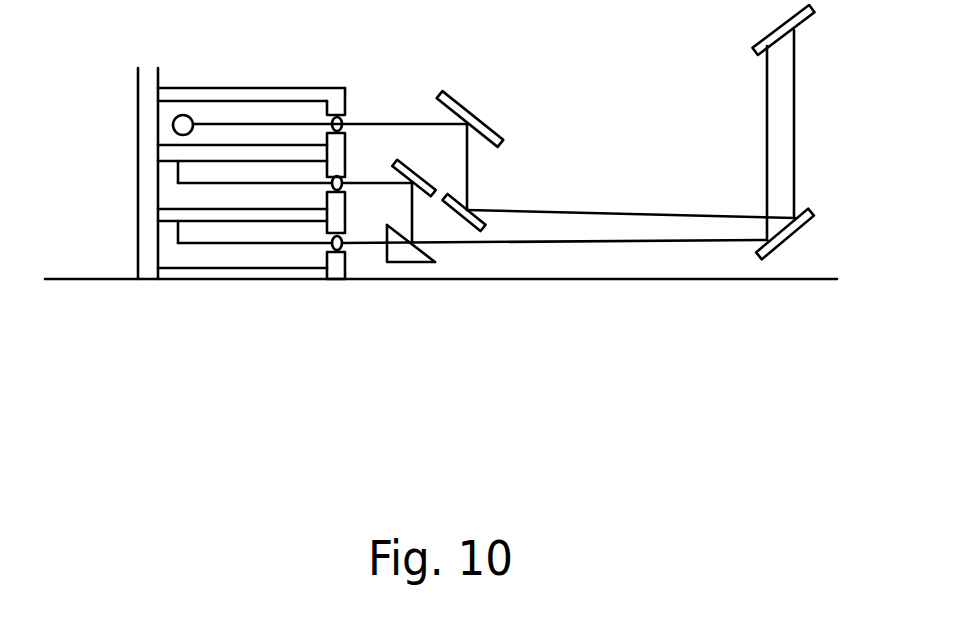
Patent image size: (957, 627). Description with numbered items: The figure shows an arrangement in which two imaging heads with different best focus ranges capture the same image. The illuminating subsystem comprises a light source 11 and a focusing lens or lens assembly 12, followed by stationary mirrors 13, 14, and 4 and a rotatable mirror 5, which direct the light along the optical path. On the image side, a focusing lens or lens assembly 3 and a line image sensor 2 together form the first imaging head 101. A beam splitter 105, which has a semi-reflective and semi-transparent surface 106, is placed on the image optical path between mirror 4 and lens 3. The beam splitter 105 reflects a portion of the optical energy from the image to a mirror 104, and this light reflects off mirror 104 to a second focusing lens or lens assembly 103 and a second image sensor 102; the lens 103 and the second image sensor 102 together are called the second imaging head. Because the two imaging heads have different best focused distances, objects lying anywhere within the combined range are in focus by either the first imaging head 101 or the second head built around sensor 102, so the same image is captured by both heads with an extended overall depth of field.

The line image sensor 2 is at (170, 258).
The focusing lens or lens assembly 3 is at (330, 251).
The stationary mirror 4 is at (763, 238).
The rotatable mirror 5 is at (787, 35).
The light source 11 is at (185, 115).
The focusing lens or lens assembly 12 is at (332, 121).
The stationary mirror 13 is at (466, 124).
The stationary mirror 14 is at (472, 204).
The imaging head 101 is at (441, 262).
The second image sensor 102 is at (170, 192).
The second focusing lens or lens assembly 103 is at (331, 187).
The mirror 104 is at (393, 172).
The beam splitter 105 is at (405, 253).
The semi-reflective and semi-transparent surface 106 is at (428, 250).